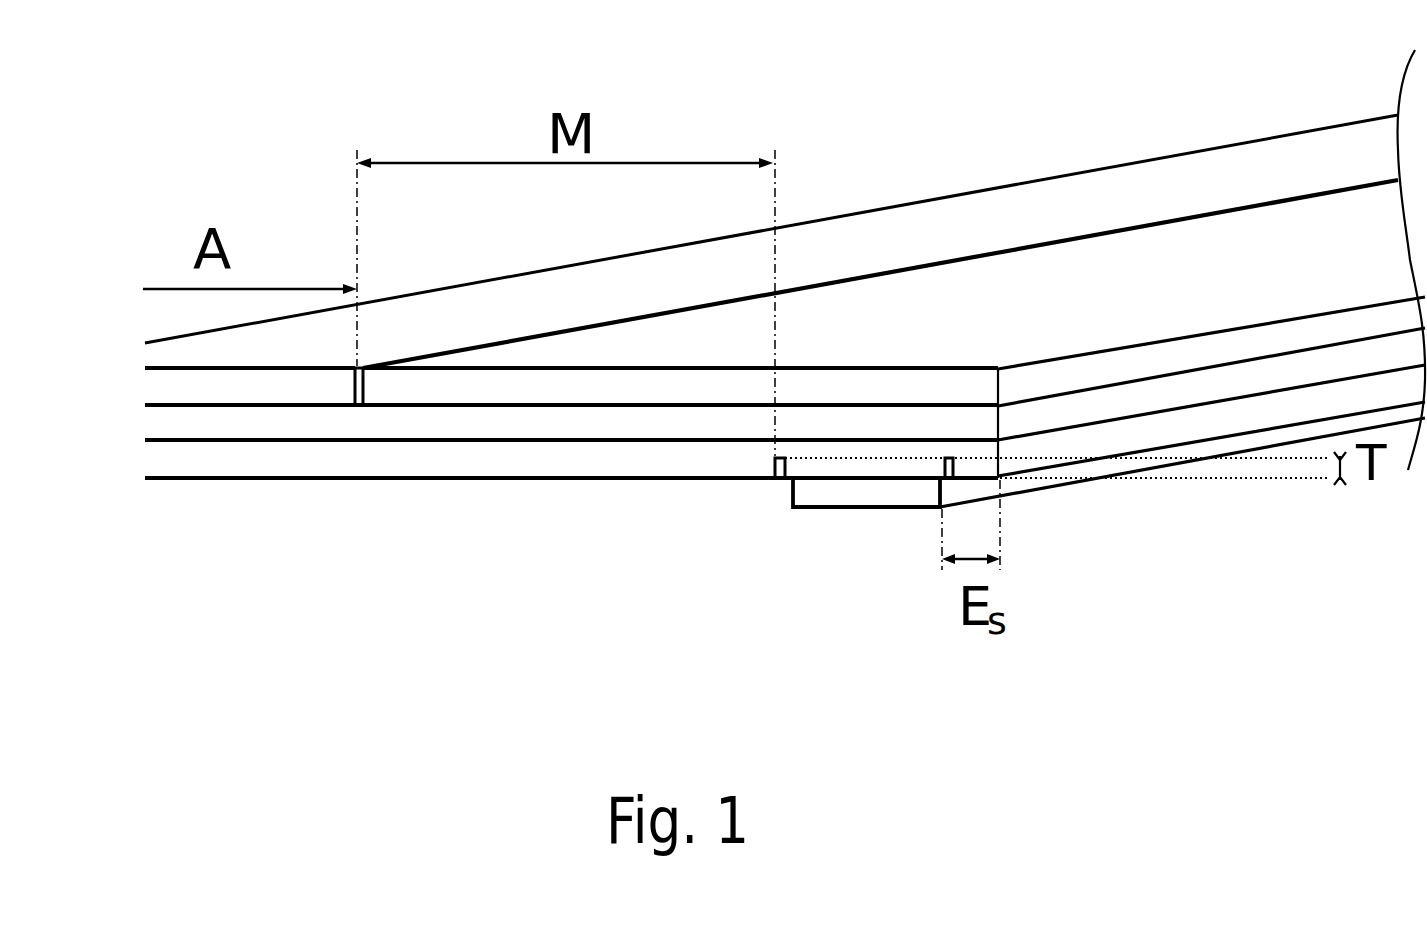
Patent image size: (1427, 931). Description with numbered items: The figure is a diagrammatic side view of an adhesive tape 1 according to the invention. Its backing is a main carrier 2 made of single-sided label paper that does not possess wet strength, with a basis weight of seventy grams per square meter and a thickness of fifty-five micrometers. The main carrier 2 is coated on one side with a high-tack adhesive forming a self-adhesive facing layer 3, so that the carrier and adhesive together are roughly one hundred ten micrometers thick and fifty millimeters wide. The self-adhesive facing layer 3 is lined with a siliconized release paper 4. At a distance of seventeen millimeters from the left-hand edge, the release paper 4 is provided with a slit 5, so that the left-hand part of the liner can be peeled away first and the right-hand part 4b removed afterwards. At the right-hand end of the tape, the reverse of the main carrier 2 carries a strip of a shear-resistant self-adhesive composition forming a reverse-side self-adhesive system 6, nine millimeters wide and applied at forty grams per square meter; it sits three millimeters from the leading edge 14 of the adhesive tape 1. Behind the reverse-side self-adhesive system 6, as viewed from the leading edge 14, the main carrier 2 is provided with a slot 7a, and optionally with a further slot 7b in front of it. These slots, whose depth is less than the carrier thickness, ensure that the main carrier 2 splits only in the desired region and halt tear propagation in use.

The adhesive tape 1 is at (147, 540).
The main carrier 2 is at (255, 462).
The self-adhesive facing layer 3 is at (493, 427).
The release paper 4 is at (578, 383).
The right-hand part of the release paper 4b is at (660, 383).
The slit 5 is at (363, 405).
The reverse-side self-adhesive system 6 is at (815, 490).
The slot 7a is at (782, 480).
The slot 7b is at (953, 479).
The leading edge 14 is at (998, 423).